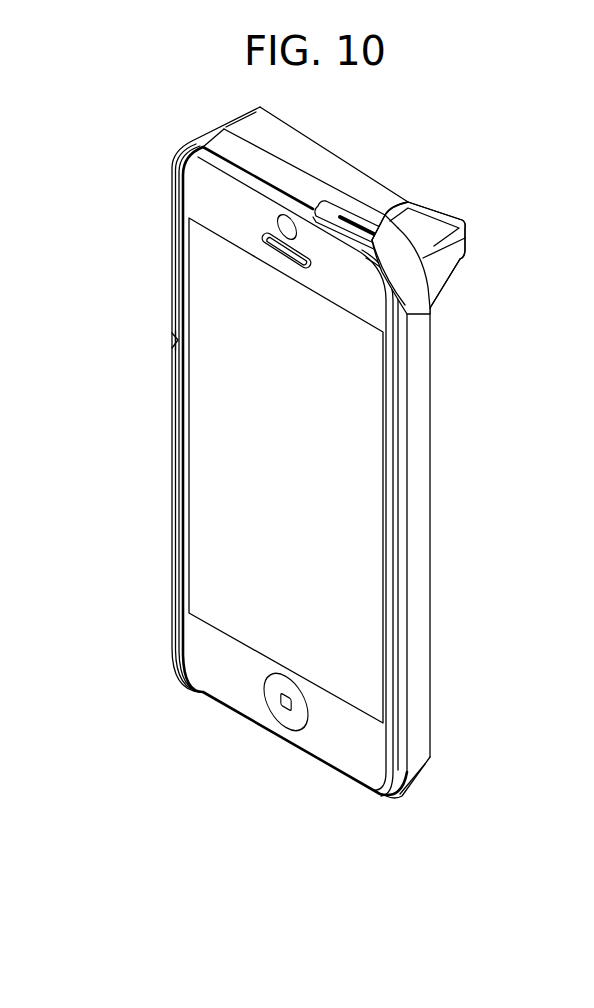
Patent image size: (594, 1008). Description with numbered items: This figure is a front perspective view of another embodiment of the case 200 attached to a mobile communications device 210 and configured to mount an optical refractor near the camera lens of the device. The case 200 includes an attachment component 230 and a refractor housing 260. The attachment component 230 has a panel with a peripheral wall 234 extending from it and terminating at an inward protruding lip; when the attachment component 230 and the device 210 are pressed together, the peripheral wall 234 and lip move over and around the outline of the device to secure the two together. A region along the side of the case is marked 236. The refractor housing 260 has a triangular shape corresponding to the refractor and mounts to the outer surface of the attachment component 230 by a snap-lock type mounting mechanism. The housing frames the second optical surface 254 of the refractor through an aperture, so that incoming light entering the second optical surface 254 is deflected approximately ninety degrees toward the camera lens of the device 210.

The case 200 is at (315, 452).
The mobile communications device 210 is at (183, 252).
The attachment component 230 is at (430, 760).
The peripheral wall 234 is at (417, 487).
The side button cover 236 is at (177, 337).
The second optical surface 254 is at (413, 220).
The refractor housing 260 is at (478, 216).